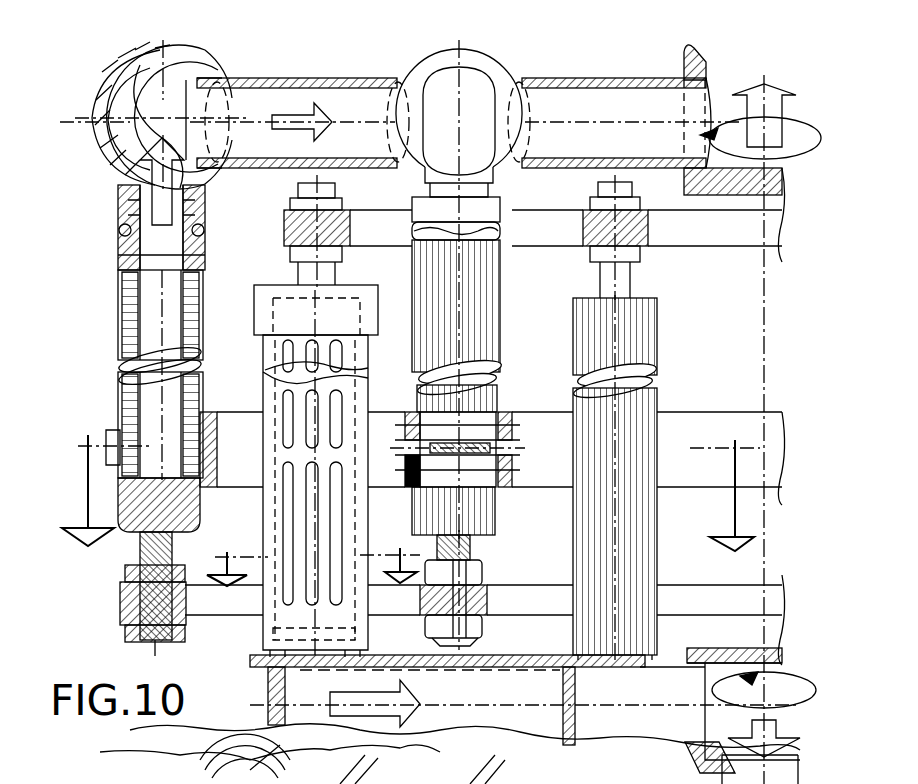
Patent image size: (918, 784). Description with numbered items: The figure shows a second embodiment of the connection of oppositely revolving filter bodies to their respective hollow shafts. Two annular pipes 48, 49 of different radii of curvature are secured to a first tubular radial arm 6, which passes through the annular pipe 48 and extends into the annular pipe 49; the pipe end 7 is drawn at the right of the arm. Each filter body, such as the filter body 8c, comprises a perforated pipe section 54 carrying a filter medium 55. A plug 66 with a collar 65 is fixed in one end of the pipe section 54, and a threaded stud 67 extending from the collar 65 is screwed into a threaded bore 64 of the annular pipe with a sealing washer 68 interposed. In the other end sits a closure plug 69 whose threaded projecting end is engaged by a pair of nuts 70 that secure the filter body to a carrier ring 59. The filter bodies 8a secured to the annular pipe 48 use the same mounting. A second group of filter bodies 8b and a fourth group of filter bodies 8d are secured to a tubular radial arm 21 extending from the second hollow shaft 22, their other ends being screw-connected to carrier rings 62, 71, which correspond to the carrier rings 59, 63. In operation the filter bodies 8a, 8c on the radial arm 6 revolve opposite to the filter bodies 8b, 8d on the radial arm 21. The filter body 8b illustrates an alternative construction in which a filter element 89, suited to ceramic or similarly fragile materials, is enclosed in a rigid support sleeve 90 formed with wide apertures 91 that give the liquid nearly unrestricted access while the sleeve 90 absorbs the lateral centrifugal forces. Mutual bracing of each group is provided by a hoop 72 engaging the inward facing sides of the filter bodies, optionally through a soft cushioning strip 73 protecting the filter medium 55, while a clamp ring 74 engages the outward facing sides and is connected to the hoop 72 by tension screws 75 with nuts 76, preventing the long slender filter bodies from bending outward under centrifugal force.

The first tubular radial arm 6 is at (548, 82).
The pipe flange end 7 is at (686, 72).
The annular pipe 48 is at (436, 62).
The annular pipe 49 is at (202, 66).
The threaded stud 67 is at (146, 62).
The threaded bore 64 is at (128, 170).
The collar 65 is at (205, 212).
The plug 66 is at (205, 248).
The sealing washer 68 is at (205, 188).
The filter body 8c is at (109, 367).
The filter medium 55 is at (118, 346).
The perforated pipe section 54 is at (118, 400).
The hoop 72 is at (214, 412).
The cushioning strip 73 is at (204, 412).
The closure plug 69 is at (200, 500).
The carrier ring 59 is at (122, 606).
The nuts 70 is at (125, 572).
The carrier ring 62 is at (352, 214).
The filter body 8b is at (291, 485).
The apertures 91 is at (292, 528).
The rigid support sleeve 90 is at (352, 640).
The filter element 89 is at (268, 662).
The filter body 8a is at (500, 302).
The clamp ring 74 is at (410, 414).
The tension screws 75 is at (512, 446).
The nuts 76 is at (408, 480).
The carrier ring 63 is at (488, 592).
The carrier ring 71 is at (588, 212).
The filter body 8d is at (657, 580).
The tubular radial arm 21 is at (506, 668).
The second hollow shaft 22 is at (734, 648).